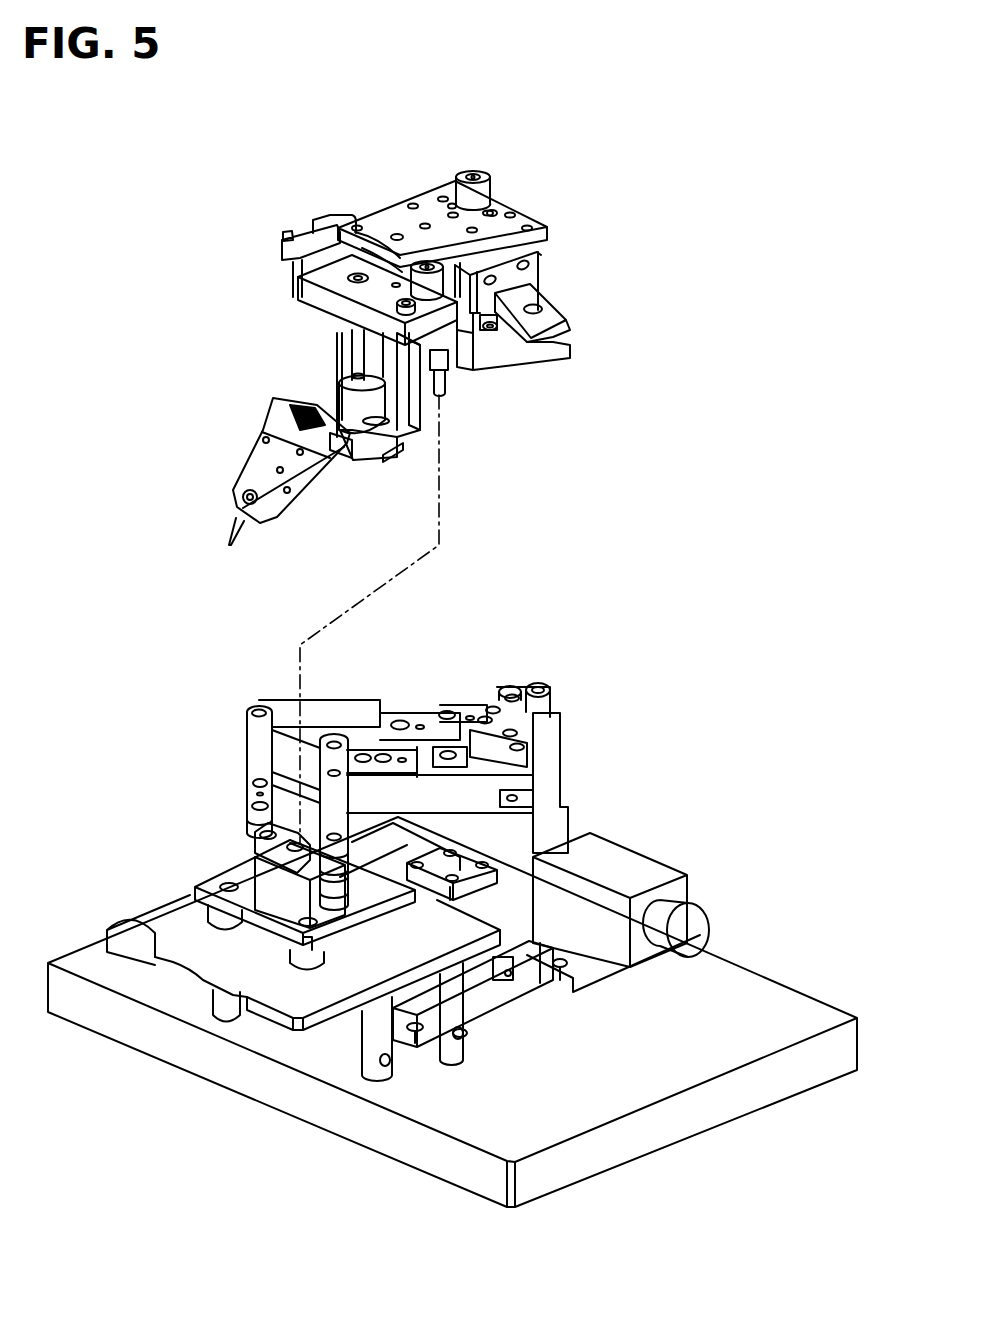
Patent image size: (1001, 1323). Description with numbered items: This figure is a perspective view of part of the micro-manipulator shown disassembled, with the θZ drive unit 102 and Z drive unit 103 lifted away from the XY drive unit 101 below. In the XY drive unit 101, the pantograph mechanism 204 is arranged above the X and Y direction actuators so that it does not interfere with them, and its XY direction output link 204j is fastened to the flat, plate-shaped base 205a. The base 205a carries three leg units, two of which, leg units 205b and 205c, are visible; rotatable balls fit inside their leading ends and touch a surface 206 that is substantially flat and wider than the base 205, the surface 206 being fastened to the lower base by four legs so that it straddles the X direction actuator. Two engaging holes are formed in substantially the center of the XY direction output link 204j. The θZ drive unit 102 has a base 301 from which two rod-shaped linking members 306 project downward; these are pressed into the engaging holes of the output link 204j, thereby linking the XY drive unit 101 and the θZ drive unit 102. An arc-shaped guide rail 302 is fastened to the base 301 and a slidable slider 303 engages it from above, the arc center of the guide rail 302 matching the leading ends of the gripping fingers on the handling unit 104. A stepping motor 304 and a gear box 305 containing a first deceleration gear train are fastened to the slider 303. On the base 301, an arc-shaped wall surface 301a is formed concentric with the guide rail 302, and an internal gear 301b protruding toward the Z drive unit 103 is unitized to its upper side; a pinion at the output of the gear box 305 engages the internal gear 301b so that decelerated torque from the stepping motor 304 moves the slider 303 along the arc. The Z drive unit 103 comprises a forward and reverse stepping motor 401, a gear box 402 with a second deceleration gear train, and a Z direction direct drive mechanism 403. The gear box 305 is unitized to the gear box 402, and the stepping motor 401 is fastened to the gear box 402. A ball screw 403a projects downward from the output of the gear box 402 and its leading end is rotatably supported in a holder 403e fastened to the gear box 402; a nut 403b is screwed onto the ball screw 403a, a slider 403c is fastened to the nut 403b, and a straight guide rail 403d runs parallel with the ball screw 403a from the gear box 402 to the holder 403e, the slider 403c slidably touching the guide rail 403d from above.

The XY drive unit 101 is at (602, 656).
The θZ drive unit 102 is at (491, 152).
The Z drive unit 103 is at (199, 338).
The handling unit 104 is at (216, 540).
The pantograph mechanism 204 is at (451, 680).
The XY direction output link 204j is at (298, 840).
The base 205 is at (163, 878).
The base 205a is at (237, 875).
The leg unit 205b is at (313, 960).
The leg unit 205c is at (233, 920).
The surface 206 is at (103, 922).
The base 301 is at (497, 363).
The arc-shaped wall surface 301a is at (460, 365).
The internal gear 301b is at (282, 250).
The arc-shaped guide rail 302 is at (573, 300).
The slider 303 is at (540, 275).
The stepping motor 304 is at (490, 200).
The gear box 305 is at (401, 212).
The linking member 306 is at (446, 374).
The stepping motor 401 is at (543, 252).
The gear box 402 is at (331, 273).
The Z direction direct drive mechanism 403 is at (250, 364).
The ball screw 403a is at (352, 361).
The nut 403b is at (350, 458).
The slider 403c is at (402, 440).
The straight guide rail 403d is at (408, 378).
The holder 403e is at (340, 356).